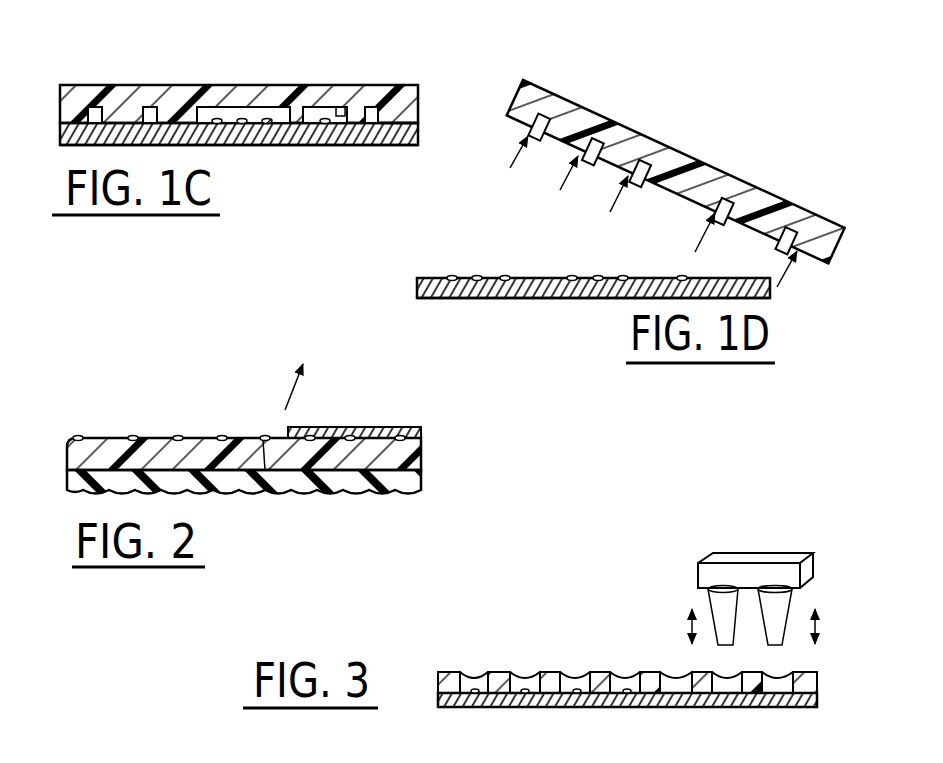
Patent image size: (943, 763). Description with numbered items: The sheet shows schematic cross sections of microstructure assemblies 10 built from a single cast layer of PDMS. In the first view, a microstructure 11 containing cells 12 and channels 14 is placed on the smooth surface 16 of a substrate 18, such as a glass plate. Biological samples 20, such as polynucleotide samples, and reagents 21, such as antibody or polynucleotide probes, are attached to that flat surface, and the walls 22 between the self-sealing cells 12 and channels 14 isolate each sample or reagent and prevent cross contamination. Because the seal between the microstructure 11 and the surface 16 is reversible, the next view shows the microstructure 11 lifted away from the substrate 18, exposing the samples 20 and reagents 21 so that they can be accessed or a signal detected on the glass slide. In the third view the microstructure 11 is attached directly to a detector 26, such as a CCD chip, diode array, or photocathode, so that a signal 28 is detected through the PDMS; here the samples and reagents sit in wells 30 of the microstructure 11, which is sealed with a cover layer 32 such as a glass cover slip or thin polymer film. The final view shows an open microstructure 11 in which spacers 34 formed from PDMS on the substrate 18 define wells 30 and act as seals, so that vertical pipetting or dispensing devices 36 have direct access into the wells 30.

In FIG. 1C, the microstructure assembly 10 is at (220, 44).
In FIG. 1C, the microstructure 11 is at (273, 103).
In FIG. 1D, the microstructure 11 is at (595, 117).
In FIG. 2, the microstructure 11 is at (67, 450).
In FIG. 1C, the cells 12 is at (258, 127).
In FIG. 1C, the channels 14 is at (140, 108).
In FIG. 2, the channels 14 is at (263, 440).
In FIG. 1C, the smooth surface 16 is at (402, 118).
In FIG. 1D, the smooth surface 16 is at (435, 277).
In FIG. 1C, the substrate 18 is at (347, 144).
In FIG. 1D, the substrate 18 is at (773, 294).
In FIG. 1C, the biological samples 20 is at (242, 118).
In FIG. 1D, the biological samples 20 is at (505, 274).
In FIG. 1C, the reagents 21 is at (271, 118).
In FIG. 1D, the reagents 21 is at (683, 274).
In FIG. 1C, the walls 22 is at (342, 110).
In FIG. 1D, the walls 22 is at (637, 160).
In FIG. 2, the detector 26 is at (105, 484).
In FIG. 2, the signal 28 is at (293, 398).
In FIG. 2, the wells 30 is at (78, 438).
In FIG. 2, the cover layer 32 is at (373, 427).
In FIG. 3, the spacers 34 is at (744, 702).
In FIG. 3, the dispensing devices 36 is at (783, 565).